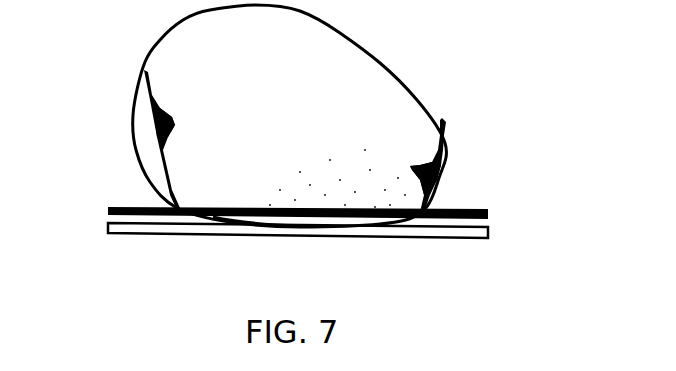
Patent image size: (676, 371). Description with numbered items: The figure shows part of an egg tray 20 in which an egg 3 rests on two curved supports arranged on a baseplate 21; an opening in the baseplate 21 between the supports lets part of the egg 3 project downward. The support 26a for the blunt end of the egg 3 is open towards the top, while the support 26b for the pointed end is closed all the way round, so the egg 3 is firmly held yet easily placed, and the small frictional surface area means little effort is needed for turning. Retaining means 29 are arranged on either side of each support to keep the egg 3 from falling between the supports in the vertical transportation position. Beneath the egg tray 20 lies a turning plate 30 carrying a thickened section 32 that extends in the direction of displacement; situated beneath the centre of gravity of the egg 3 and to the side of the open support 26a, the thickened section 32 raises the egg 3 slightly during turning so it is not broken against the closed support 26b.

The egg 3 is at (360, 78).
The egg tray 20 is at (357, 205).
The baseplate 21 is at (488, 216).
The support for the blunt end of the egg 26a is at (157, 160).
The support for the pointed end of the egg 26b is at (445, 123).
The retaining means 29 is at (400, 164).
The turning plate 30 is at (488, 237).
The thickened section 32 is at (216, 219).